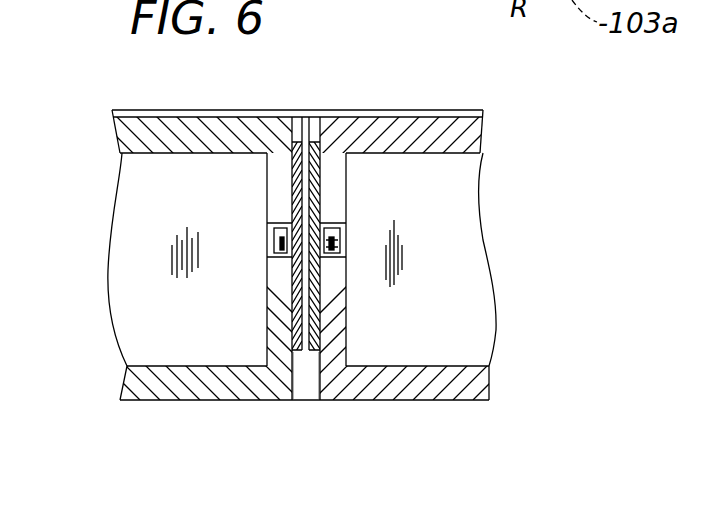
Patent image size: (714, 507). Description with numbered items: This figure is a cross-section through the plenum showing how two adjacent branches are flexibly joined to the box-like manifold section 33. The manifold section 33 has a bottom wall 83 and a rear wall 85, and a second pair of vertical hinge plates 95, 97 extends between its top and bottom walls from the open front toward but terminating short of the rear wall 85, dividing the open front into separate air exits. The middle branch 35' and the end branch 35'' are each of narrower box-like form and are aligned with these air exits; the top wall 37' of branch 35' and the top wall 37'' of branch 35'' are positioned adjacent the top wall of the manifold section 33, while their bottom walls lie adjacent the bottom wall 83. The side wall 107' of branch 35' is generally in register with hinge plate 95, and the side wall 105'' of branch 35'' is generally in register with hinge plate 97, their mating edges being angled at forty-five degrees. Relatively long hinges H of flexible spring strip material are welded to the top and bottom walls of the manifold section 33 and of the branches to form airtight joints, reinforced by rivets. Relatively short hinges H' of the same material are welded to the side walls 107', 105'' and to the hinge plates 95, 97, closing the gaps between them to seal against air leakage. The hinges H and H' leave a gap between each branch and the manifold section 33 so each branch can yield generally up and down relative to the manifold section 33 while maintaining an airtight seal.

The hinge H is at (297, 82).
The top wall of branch 35' 37' is at (195, 107).
The branch 35' is at (206, 103).
The top wall of branch 35'' 37'' is at (436, 121).
The branch 35'' is at (443, 154).
The rear wall 85 is at (138, 195).
The side wall of branch 35' 107' is at (219, 229).
The side wall of branch 35'' 105'' is at (404, 222).
The hinge plate 95 is at (267, 305).
The hinge plate 97 is at (347, 314).
The manifold section 33 is at (168, 401).
The bottom wall 83 is at (220, 393).
The hinge H' is at (338, 425).